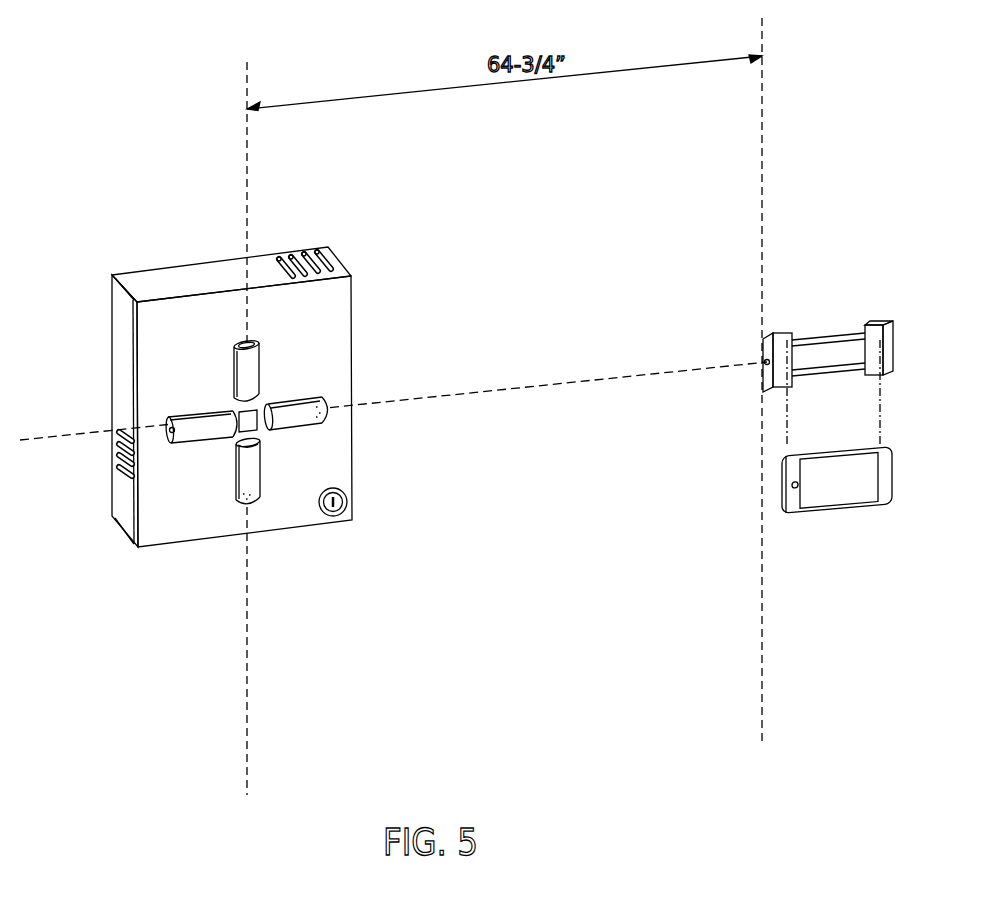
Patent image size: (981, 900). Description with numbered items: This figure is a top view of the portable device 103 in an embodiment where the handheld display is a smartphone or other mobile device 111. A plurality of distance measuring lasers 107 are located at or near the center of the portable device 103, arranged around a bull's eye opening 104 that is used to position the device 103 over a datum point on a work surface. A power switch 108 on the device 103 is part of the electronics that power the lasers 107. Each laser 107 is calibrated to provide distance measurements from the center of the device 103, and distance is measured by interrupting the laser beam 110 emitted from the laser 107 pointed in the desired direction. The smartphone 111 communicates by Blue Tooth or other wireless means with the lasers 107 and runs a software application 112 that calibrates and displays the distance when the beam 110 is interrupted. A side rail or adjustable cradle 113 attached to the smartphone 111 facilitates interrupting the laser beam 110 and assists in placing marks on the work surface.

The portable device 103 is at (165, 287).
The bull's eye opening 104 is at (243, 418).
The distance measuring lasers 107 is at (260, 365).
The power switch 108 is at (342, 513).
The laser beam 110 is at (533, 388).
The smartphone or other mobile device 111 is at (865, 507).
The software application 112 is at (830, 497).
The side rail or adjustable cradle 113 is at (872, 322).